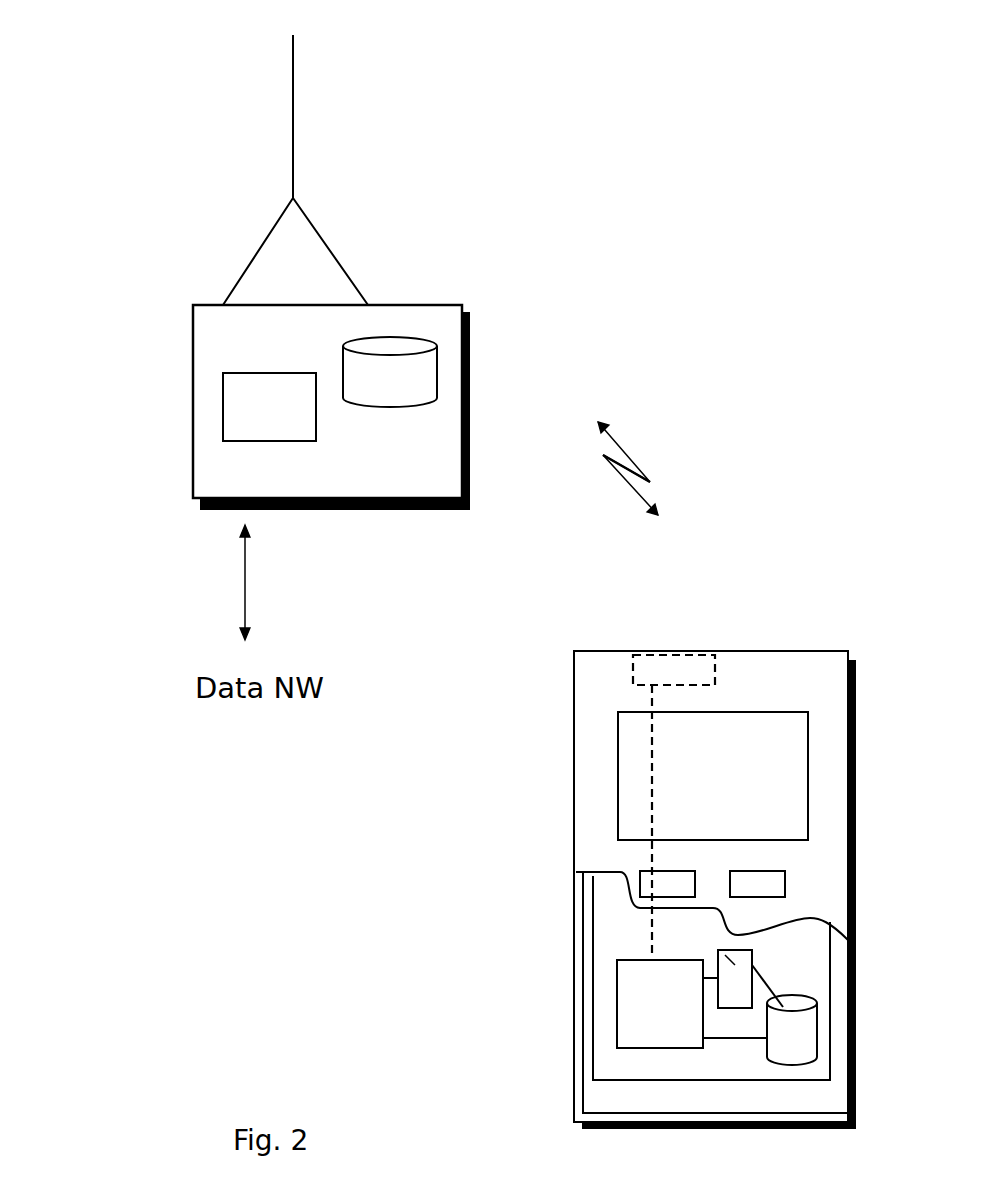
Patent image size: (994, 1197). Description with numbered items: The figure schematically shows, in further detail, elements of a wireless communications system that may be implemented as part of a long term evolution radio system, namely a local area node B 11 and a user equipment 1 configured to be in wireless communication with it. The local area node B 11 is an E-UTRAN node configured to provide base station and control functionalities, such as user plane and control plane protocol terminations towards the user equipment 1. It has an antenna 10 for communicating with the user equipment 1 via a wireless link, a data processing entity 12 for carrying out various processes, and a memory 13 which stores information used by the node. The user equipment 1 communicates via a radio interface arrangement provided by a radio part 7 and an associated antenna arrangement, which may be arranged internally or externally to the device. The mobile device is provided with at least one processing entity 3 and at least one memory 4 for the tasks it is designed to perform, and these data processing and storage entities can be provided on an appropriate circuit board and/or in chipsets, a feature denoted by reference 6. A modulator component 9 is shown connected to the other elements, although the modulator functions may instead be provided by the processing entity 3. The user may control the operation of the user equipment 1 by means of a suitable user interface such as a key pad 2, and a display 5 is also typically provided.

The user equipment 1 is at (574, 688).
The key pad 2 is at (643, 883).
The processing entity 3 is at (623, 988).
The memory 4 is at (787, 1040).
The display 5 is at (635, 763).
The circuit board 6 is at (618, 1067).
The radio part 7 is at (653, 662).
The modulator component 9 is at (718, 951).
The antenna 10 is at (293, 82).
The local area node B 11 is at (407, 305).
The server processor 12 is at (238, 415).
The memory 13 is at (437, 368).